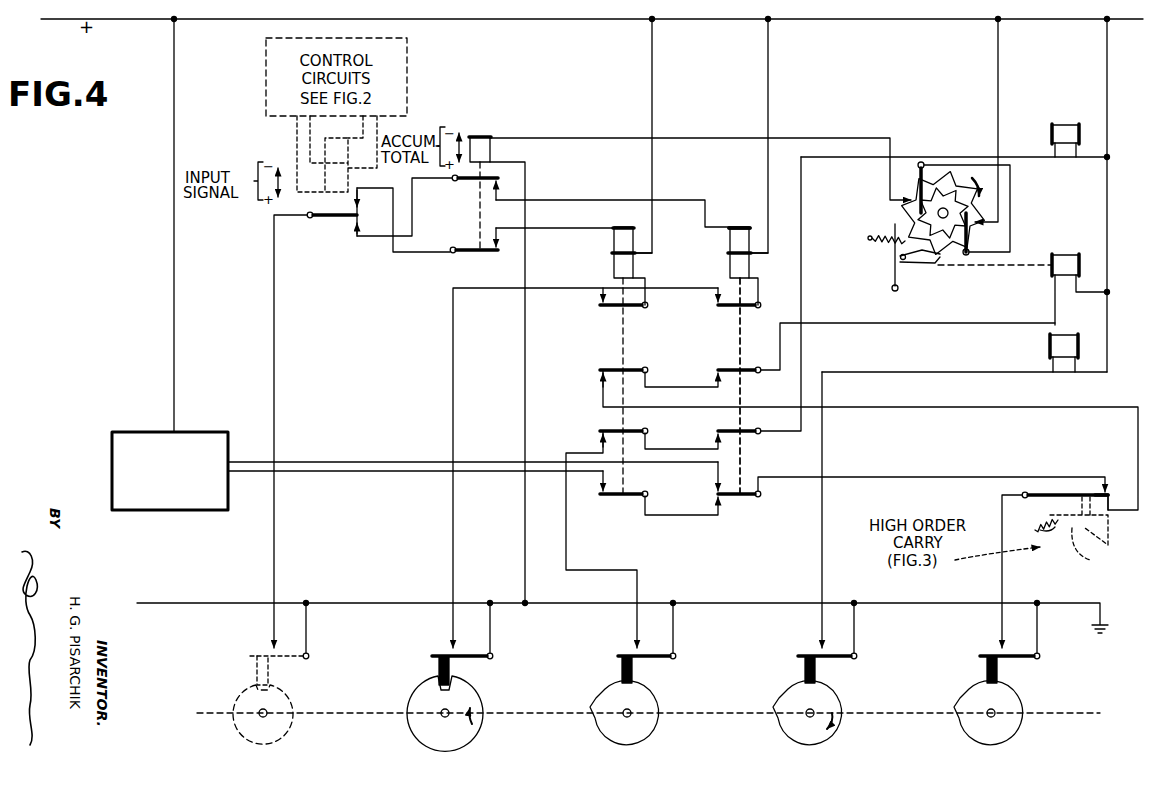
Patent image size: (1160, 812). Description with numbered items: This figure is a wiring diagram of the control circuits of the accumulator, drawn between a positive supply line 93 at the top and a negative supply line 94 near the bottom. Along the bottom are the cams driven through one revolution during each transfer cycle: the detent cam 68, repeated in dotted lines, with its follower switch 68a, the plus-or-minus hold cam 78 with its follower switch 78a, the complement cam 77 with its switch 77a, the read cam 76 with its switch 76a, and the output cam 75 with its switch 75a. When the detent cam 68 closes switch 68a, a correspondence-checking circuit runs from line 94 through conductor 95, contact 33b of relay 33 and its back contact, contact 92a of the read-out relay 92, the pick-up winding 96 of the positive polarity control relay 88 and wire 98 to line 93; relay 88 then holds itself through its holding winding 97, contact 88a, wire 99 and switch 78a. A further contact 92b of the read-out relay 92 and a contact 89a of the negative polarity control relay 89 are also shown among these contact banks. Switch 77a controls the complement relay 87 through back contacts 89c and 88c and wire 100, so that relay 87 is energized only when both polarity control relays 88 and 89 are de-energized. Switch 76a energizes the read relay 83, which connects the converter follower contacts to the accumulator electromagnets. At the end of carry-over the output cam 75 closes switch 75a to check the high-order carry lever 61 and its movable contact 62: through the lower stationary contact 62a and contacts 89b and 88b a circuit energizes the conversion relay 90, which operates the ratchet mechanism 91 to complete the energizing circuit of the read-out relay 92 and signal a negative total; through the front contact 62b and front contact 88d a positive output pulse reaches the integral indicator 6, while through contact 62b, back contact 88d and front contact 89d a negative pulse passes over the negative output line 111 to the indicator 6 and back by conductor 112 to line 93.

The integral indicator 6 is at (215, 432).
The relay 33 is at (282, 142).
The contact of relay 33 33b is at (352, 218).
The high-order carry lever 61 is at (1091, 550).
The carry-over switch 62 is at (1028, 493).
The lower stationary contact 62a is at (1110, 502).
The front contact of high-order carry lever 62b is at (1103, 488).
The detent cam 68 is at (292, 700).
The follower switch of detent cam 68a is at (249, 654).
The output cam 75 is at (1022, 700).
The output cam switch 75a is at (984, 651).
The read cam 76 is at (832, 700).
The read cam switch 76a is at (803, 651).
The complement cam 77 is at (652, 700).
The complement cam switch 77a is at (625, 651).
The plus-or-minus hold cam 78 is at (478, 700).
The follower switch of hold cam 78a is at (431, 652).
The read relay 83 is at (1068, 344).
The complement relay 87 is at (1068, 145).
The positive polarity control relay 88 is at (789, 270).
The contact of relay 88 88a is at (718, 306).
The contact of relay 88 88b is at (718, 368).
The back contact of relay 88 88c is at (718, 430).
The contact of relay 88 88d is at (718, 493).
The negative polarity control relay 89 is at (600, 259).
The minus relay contact 89a is at (607, 308).
The contact of relay 89 89b is at (604, 371).
The back contact of relay 89 89c is at (603, 431).
The front contact of relay 89 89d is at (605, 497).
The conversion relay 90 is at (1060, 268).
The ratchet mechanism 91 is at (896, 213).
The read-out relay 92 is at (481, 139).
The contact of read-out relay 92a is at (500, 178).
The accumulated total switch contact 92b is at (480, 253).
The positive supply line 93 is at (618, 20).
The negative supply line 94 is at (748, 603).
The conductor 95 is at (276, 362).
The pick-up winding of relay 88 96 is at (741, 226).
The holding winding of relay 88 97 is at (730, 268).
The wire 98 is at (767, 57).
The wire 99 is at (456, 413).
The wire 100 is at (1107, 143).
The negative output line 111 is at (378, 473).
The conductor 112 is at (176, 352).